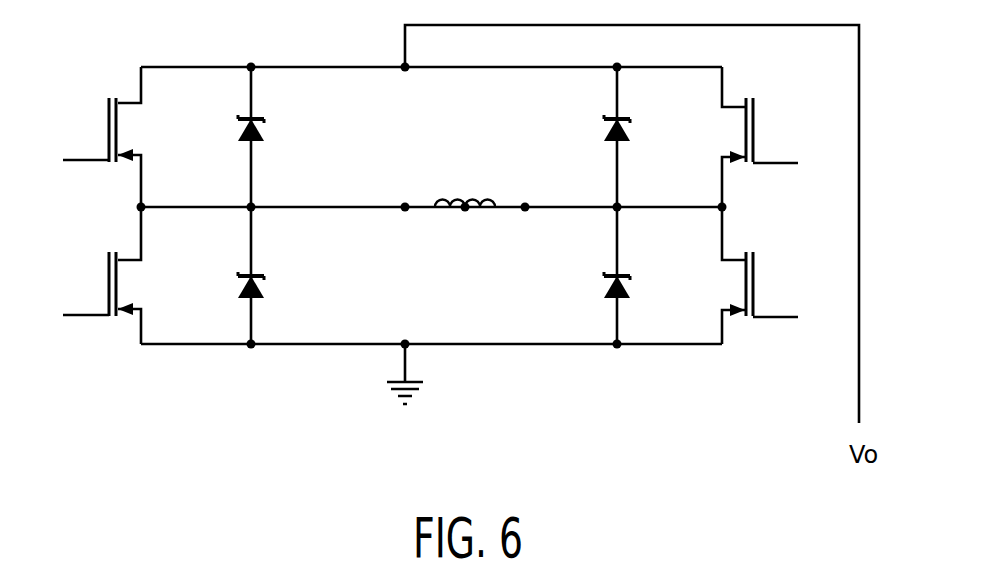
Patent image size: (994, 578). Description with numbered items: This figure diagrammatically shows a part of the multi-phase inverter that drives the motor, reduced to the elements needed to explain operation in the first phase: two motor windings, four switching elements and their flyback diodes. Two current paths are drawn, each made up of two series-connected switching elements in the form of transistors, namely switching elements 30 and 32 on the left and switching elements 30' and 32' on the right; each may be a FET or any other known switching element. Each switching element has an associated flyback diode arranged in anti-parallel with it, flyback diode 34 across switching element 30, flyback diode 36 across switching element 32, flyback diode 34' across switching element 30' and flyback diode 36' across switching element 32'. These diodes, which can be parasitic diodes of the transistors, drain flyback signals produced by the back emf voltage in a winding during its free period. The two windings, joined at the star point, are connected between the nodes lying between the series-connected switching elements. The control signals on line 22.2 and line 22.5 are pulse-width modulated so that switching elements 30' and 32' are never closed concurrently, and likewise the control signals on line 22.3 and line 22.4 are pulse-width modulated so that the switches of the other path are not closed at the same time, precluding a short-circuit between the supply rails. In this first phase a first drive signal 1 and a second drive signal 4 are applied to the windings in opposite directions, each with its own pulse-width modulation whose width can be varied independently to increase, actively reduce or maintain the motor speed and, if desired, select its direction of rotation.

The first drive signal 1 is at (495, 185).
The second drive signal 4 is at (495, 247).
The switching element 30 is at (152, 130).
The switching element 32 is at (152, 284).
The switching element 30' is at (709, 130).
The switching element 32' is at (709, 284).
The flyback diode 34 is at (274, 137).
The flyback diode 36 is at (274, 275).
The flyback diode 34' is at (589, 137).
The flyback diode 36' is at (589, 275).
The line 22.2 is at (786, 163).
The line 22.3 is at (73, 160).
The line 22.4 is at (73, 315).
The line 22.5 is at (786, 317).